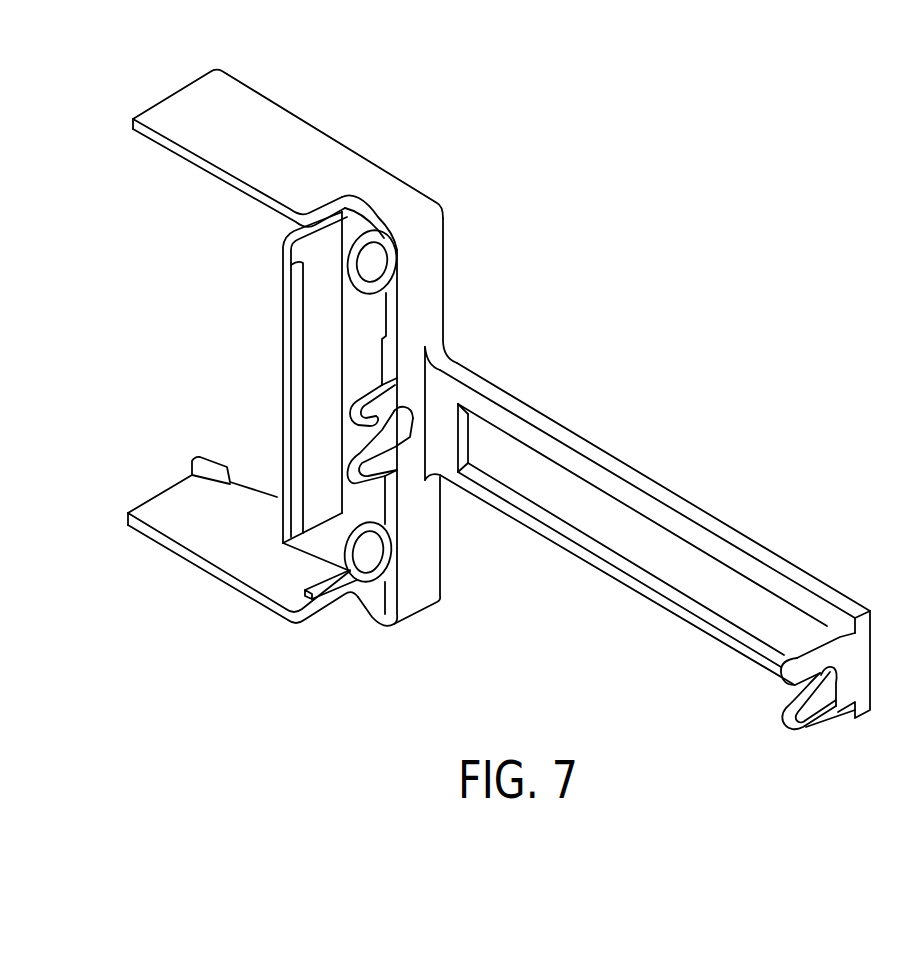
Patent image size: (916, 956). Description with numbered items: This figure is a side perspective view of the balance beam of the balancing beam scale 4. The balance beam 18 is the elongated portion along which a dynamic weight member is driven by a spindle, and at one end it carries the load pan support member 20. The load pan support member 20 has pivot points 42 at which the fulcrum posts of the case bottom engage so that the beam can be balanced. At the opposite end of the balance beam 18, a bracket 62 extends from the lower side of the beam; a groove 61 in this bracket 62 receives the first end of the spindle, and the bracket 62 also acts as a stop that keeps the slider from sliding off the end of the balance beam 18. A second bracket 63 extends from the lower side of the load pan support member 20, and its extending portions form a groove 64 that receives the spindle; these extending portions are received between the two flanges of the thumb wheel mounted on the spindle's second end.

The balancing beam scale 4 is at (607, 334).
The balance beam 18 is at (645, 449).
The load pan support member 20 is at (243, 124).
The pivot points 42 is at (368, 265).
The groove 61 is at (822, 686).
The bracket 62 is at (793, 758).
The second bracket 63 is at (367, 422).
The groove 64 is at (390, 437).